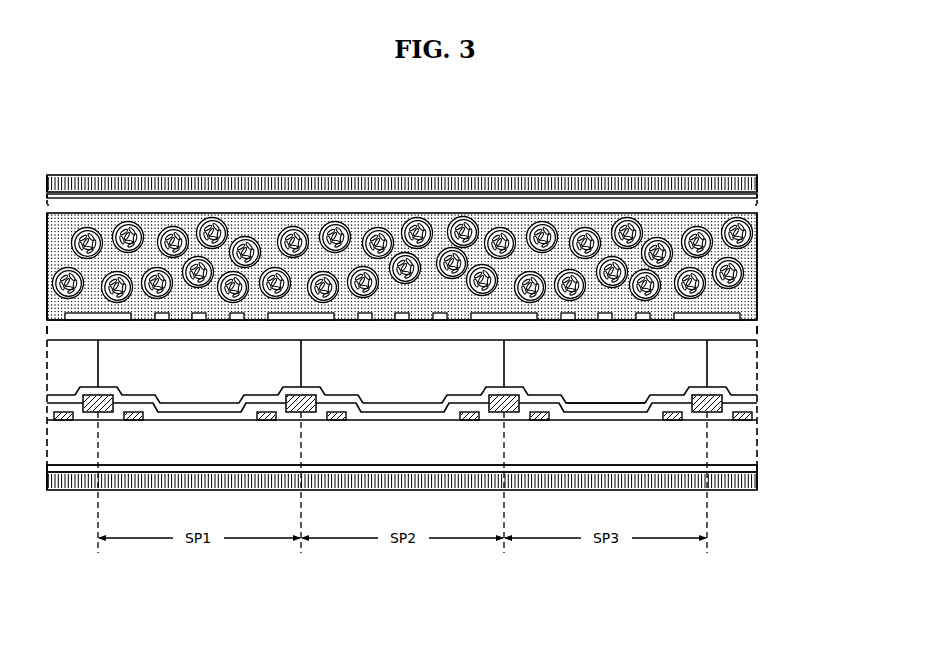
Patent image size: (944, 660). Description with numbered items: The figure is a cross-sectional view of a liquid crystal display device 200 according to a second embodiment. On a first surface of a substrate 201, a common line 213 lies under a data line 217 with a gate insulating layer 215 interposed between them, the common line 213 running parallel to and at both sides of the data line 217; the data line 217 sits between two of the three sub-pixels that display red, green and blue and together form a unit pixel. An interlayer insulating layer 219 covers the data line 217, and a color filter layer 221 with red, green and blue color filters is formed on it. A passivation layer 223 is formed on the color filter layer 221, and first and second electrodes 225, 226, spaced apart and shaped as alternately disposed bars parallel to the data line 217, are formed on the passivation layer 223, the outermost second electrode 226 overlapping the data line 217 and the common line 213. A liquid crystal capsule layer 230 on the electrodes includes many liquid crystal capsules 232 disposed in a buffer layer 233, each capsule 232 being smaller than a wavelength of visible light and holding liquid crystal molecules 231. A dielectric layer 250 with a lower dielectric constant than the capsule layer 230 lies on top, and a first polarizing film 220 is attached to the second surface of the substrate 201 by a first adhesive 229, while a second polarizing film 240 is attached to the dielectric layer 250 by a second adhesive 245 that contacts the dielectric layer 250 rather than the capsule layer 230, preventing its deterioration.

The liquid crystal display device 200 is at (738, 154).
The substrate 201 is at (752, 447).
The common line 213 is at (264, 420).
The gate insulating layer 215 is at (402, 418).
The data line 217 is at (495, 412).
The interlayer insulating layer 219 is at (595, 410).
The first polarizing film 220 is at (752, 484).
The color filter layer 221 is at (752, 368).
The passivation layer 223 is at (752, 330).
The first electrode 225 is at (363, 313).
The second electrode 226 is at (300, 313).
The first adhesive 229 is at (752, 468).
The liquid crystal capsule layer 230 is at (809, 221).
The liquid crystal molecules 231 is at (757, 224).
The liquid crystal capsules 232 is at (757, 242).
The buffer layer 233 is at (757, 261).
The second polarizing film 240 is at (757, 180).
The second adhesive 245 is at (757, 196).
The dielectric layer 250 is at (757, 207).